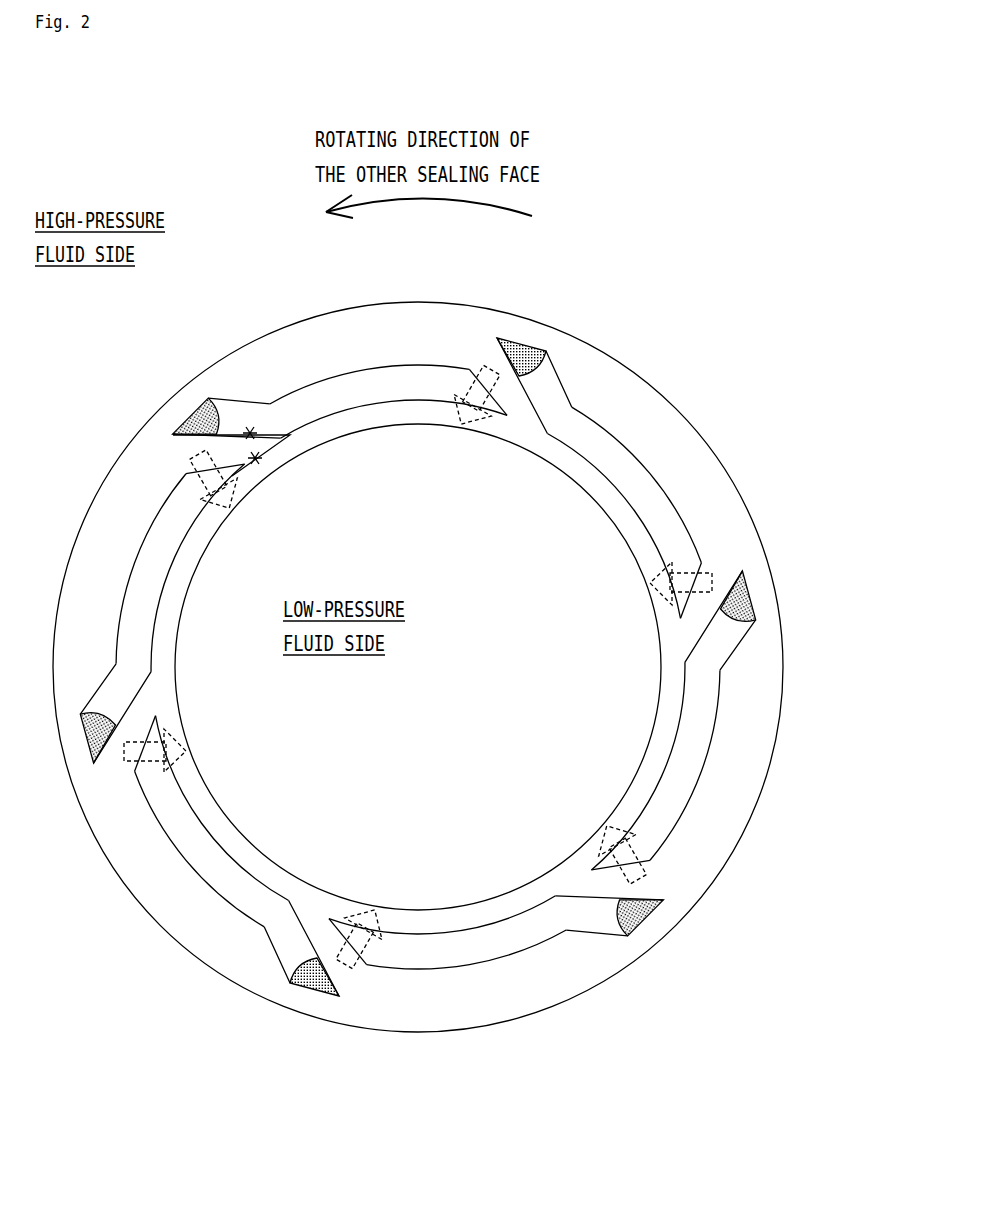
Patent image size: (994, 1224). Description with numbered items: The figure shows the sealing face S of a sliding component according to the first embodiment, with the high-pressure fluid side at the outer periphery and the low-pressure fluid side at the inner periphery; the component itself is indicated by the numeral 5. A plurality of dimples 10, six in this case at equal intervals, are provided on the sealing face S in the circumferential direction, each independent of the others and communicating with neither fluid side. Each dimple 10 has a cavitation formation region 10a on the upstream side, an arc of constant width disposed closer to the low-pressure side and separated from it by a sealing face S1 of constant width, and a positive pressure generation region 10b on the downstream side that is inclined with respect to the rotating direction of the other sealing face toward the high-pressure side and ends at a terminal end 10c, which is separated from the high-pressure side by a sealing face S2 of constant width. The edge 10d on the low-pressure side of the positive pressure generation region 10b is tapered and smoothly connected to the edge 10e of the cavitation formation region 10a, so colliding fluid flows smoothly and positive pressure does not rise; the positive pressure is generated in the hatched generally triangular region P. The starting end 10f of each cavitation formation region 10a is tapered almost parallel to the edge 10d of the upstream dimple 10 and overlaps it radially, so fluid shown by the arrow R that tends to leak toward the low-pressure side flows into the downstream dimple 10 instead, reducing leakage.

The seal ring 5 is at (318, 319).
The dimple 10 is at (390, 362).
The cavitation formation region 10a is at (408, 380).
The positive pressure generation region 10b is at (228, 412).
The terminal end 10c is at (200, 407).
The edge on the low-pressure fluid side of the positive pressure generation region 10d is at (202, 456).
The edge on the low-pressure fluid side of the cavitation formation region 10e is at (328, 415).
The starting end 10f is at (504, 396).
The arrow R is at (208, 506).
The generally triangular region P is at (185, 422).
The sealing face S is at (647, 409).
The sealing face S1 is at (596, 484).
The sealing face S2 is at (183, 412).